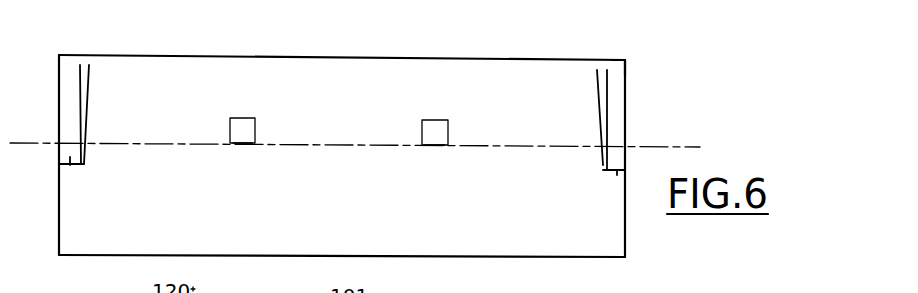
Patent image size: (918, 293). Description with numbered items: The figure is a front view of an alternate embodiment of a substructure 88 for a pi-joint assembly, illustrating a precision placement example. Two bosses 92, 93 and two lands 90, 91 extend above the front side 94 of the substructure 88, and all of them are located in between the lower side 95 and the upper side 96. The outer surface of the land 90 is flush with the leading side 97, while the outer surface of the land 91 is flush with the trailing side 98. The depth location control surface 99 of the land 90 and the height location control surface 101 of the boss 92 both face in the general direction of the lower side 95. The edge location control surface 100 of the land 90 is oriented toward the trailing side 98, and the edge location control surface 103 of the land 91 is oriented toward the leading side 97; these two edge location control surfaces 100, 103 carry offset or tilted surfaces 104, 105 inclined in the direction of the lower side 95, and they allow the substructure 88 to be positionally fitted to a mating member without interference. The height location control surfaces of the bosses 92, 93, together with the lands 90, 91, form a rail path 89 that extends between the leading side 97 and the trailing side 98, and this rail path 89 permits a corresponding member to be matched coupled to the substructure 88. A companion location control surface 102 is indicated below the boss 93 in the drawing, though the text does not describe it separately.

The substructure 88 is at (67, 220).
The rail path 89 is at (33, 140).
The land 90 is at (606, 167).
The land 91 is at (70, 166).
The boss 92 is at (434, 131).
The boss 93 is at (250, 130).
The front side 94 is at (580, 248).
The lower side 95 is at (432, 257).
The upper side 96 is at (357, 57).
The leading side 97 is at (627, 64).
The trailing side 98 is at (59, 78).
The depth location control surface 99 is at (616, 175).
The edge location control surface 100 is at (598, 153).
The height location control surface 101 is at (438, 145).
The axis segment 102 is at (245, 143).
The edge location control surface 103 is at (85, 152).
The tilted surface 104 is at (553, 93).
The tilted surface 105 is at (43, 93).